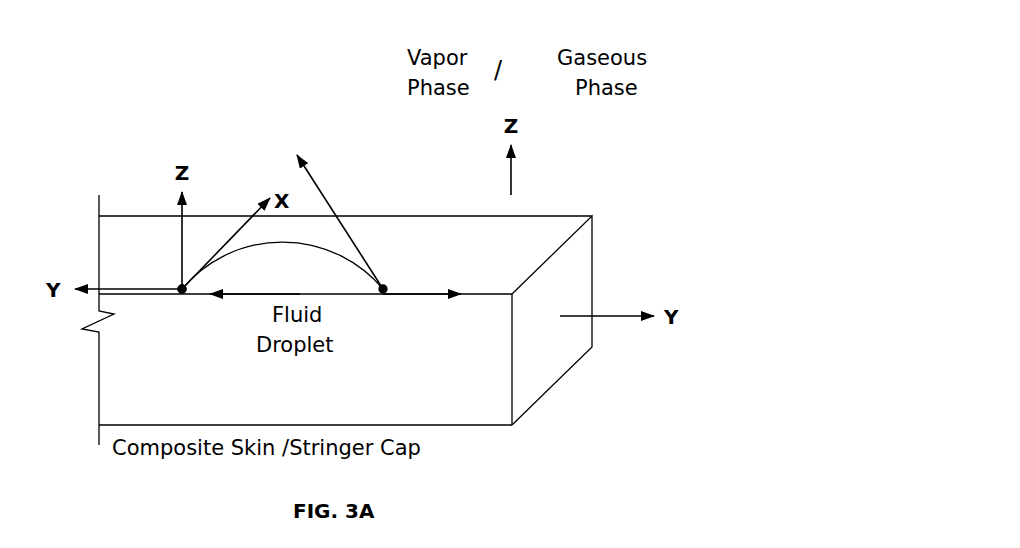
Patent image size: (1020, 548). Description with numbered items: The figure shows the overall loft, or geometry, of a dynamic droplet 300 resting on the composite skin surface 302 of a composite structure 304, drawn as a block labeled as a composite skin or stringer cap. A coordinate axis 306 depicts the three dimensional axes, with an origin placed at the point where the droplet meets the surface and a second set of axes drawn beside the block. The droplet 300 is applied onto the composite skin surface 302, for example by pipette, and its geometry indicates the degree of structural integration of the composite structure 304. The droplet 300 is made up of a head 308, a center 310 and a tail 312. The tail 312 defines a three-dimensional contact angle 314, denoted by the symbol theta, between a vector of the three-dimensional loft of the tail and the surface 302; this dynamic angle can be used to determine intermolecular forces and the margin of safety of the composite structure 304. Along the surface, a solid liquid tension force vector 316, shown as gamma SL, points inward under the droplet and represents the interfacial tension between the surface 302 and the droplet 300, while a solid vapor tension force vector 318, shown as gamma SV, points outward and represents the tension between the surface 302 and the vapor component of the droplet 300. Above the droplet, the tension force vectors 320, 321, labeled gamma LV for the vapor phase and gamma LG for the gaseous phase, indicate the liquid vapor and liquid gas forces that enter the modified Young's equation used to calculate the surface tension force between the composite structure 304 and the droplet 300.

The dynamic droplet 300 is at (364, 231).
The composite skin surface 302 is at (558, 252).
The composite structure 304 is at (570, 291).
The coordinate axis 306 is at (182, 289).
The head 308 is at (182, 293).
The center 310 is at (268, 243).
The tail 312 is at (386, 283).
The three-dimensional contact angle 314 is at (385, 294).
The solid liquid tension force vector 316 is at (214, 335).
The solid vapor tension force vector 318 is at (455, 338).
The liquid vapor tension force vector 320 is at (386, 52).
The liquid gas tension force vector 321 is at (543, 55).